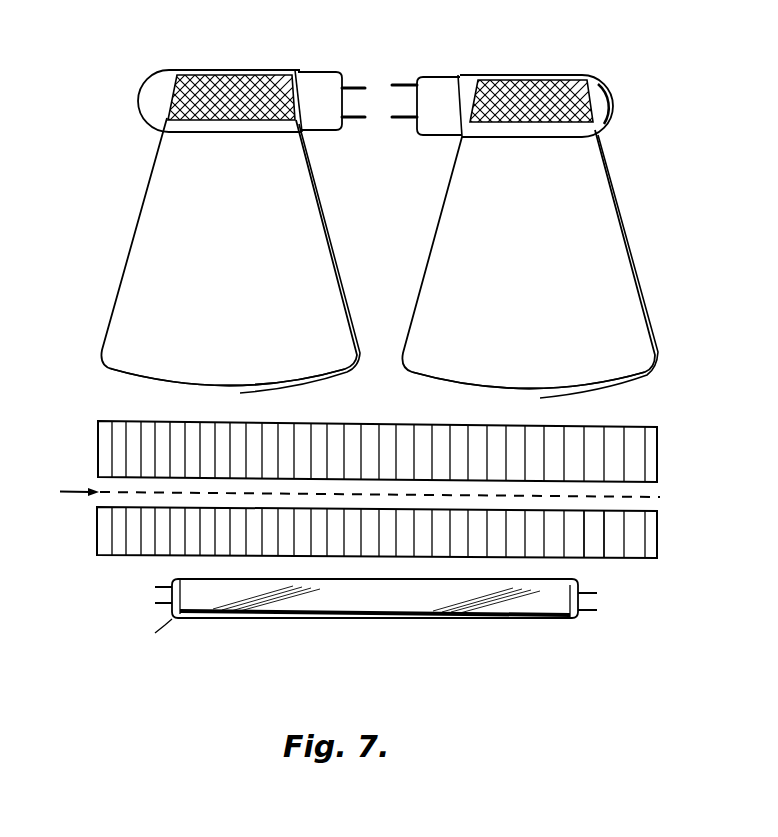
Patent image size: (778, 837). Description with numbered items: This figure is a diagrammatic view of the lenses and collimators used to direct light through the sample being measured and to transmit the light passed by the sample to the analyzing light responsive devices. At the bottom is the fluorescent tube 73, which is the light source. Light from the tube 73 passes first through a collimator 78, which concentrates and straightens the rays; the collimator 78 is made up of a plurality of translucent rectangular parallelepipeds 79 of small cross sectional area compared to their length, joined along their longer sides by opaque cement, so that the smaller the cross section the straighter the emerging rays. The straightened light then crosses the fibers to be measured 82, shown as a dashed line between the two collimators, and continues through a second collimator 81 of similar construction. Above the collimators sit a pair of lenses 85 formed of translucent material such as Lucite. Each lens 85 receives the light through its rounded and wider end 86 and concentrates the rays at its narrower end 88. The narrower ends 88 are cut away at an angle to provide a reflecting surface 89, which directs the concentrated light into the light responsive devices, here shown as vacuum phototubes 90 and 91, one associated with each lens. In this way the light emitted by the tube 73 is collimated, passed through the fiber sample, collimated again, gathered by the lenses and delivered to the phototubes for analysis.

The fluorescent tube 73 is at (553, 620).
The collimator 78 is at (659, 550).
The translucent rectangular parallelepipeds 79 is at (587, 558).
The collimator 81 is at (659, 465).
The fibers to be measured 82 is at (342, 493).
The lenses 85 is at (300, 238).
The rounded and wider ends 86 is at (183, 390).
The narrower ends 88 is at (240, 76).
The reflecting surface 89 is at (287, 80).
The vacuum phototube 90 is at (333, 84).
The vacuum phototube 91 is at (607, 104).